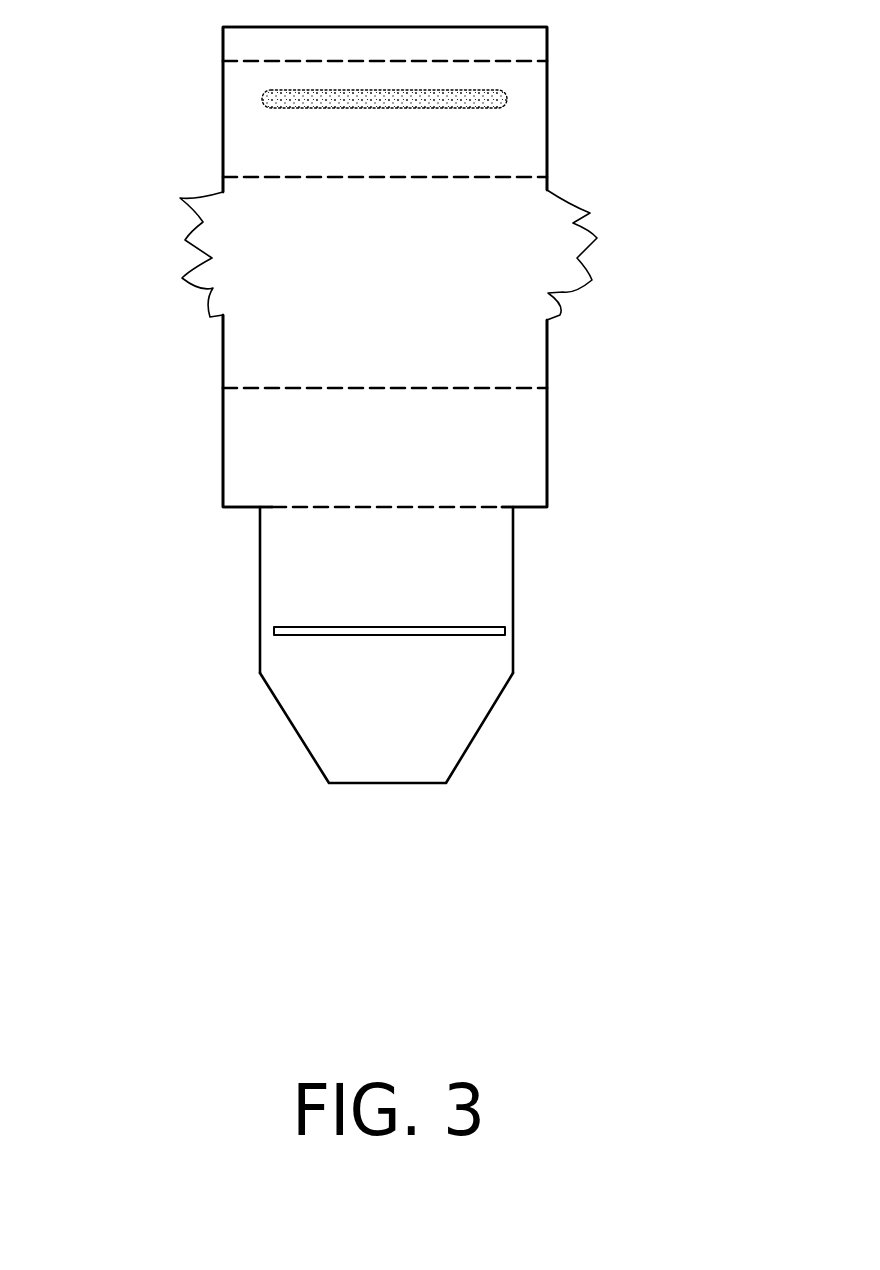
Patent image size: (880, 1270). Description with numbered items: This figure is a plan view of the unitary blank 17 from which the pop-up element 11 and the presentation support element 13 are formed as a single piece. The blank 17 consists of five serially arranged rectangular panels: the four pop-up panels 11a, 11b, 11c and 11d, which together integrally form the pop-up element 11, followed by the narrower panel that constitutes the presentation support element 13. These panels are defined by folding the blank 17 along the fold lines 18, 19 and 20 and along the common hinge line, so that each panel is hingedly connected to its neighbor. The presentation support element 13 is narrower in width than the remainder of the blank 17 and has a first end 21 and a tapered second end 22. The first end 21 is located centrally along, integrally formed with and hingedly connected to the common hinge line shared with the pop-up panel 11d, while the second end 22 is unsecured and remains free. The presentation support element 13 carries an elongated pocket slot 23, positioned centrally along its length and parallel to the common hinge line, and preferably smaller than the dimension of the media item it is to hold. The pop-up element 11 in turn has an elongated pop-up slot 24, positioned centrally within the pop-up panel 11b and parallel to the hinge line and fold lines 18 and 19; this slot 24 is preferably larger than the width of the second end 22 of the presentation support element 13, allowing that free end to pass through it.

The pop-up element 11 is at (617, 144).
The pop-up panel 11a is at (238, 48).
The pop-up panel 11b is at (252, 140).
The pop-up panel 11c is at (262, 340).
The pop-up panel 11d is at (240, 446).
The presentation support element 13 is at (497, 562).
The unitary blank 17 is at (630, 311).
The fold line 18 is at (518, 60).
The fold line 19 is at (522, 177).
The fold line 20 is at (522, 388).
The first end 21 is at (305, 507).
The tapered second end 22 is at (405, 785).
The elongated pocket slot 23 is at (505, 633).
The elongated pop-up slot 24 is at (507, 97).